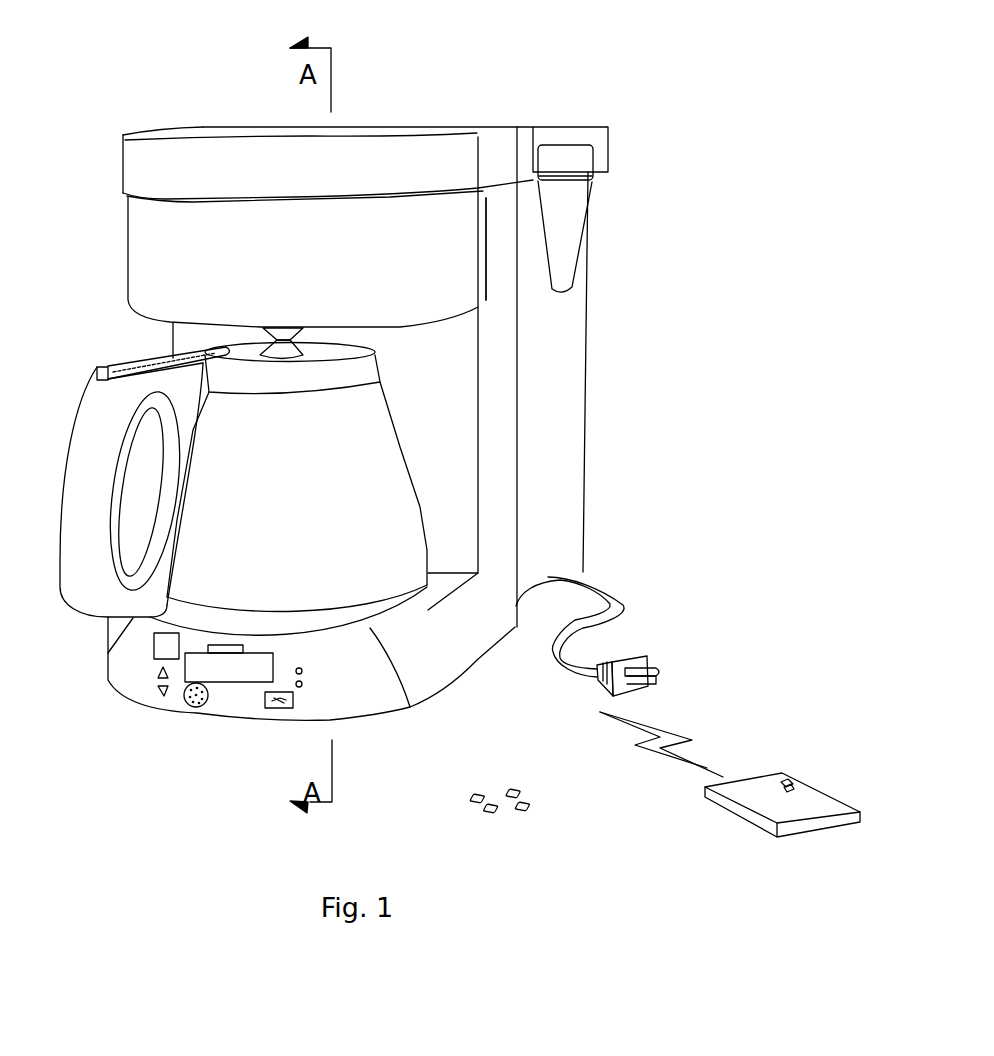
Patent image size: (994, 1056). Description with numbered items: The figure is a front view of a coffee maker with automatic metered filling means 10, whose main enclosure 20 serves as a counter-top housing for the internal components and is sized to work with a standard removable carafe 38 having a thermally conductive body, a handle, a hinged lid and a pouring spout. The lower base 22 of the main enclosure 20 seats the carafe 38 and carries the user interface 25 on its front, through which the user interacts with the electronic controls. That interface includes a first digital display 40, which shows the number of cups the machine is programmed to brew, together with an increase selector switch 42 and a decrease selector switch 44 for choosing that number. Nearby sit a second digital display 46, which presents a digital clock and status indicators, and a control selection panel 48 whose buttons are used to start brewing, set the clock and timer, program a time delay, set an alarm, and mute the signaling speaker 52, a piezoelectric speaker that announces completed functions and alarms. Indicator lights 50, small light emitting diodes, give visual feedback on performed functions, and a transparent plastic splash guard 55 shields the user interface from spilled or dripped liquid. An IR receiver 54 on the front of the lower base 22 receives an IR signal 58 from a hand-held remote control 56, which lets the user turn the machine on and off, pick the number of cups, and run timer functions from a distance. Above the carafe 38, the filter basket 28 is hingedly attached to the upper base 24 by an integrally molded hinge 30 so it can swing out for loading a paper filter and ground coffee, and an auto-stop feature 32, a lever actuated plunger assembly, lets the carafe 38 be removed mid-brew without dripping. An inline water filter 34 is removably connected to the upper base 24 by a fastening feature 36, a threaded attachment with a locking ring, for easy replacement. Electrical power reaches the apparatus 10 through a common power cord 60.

The coffee maker with automatic metered filling means 10 is at (592, 116).
The main enclosure 20 is at (517, 348).
The lower base 22 is at (108, 668).
The upper base 24 is at (136, 155).
The user interface 25 is at (227, 728).
The filter basket 28 is at (143, 243).
The hinge 30 is at (487, 195).
The auto-stop feature 32 is at (263, 330).
The inline water filter 34 is at (576, 199).
The fastening feature 36 is at (562, 165).
The removable carafe 38 is at (400, 505).
The first digital display 40 is at (154, 647).
The increase selector switch 42 is at (158, 673).
The decrease selector switch 44 is at (163, 690).
The second digital display 46 is at (243, 680).
The control selection panel 48 is at (238, 647).
The indicator lights 50 is at (303, 684).
The signaling speaker 52 is at (196, 704).
The IR receiver 54 is at (287, 708).
The splash guard 55 is at (219, 707).
The remote control 56 is at (750, 810).
The IR signal 58 is at (635, 745).
The power cord 60 is at (617, 595).